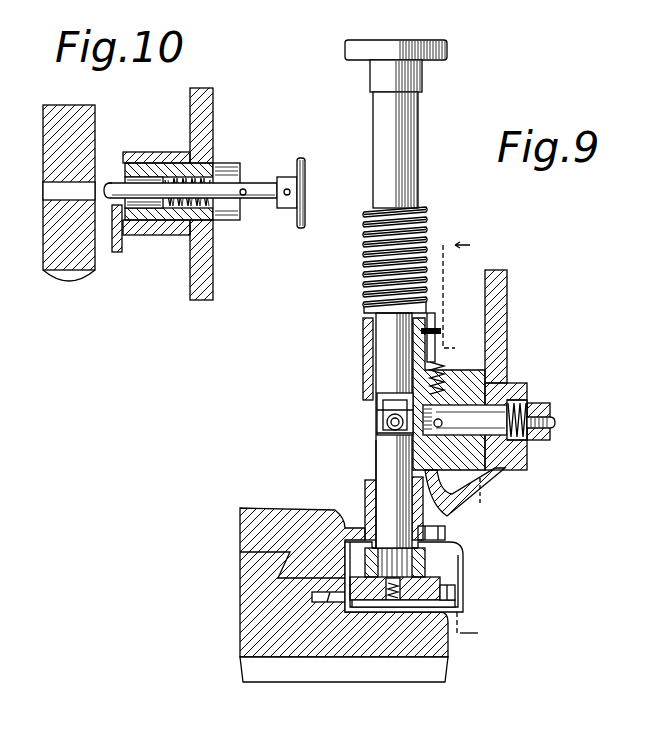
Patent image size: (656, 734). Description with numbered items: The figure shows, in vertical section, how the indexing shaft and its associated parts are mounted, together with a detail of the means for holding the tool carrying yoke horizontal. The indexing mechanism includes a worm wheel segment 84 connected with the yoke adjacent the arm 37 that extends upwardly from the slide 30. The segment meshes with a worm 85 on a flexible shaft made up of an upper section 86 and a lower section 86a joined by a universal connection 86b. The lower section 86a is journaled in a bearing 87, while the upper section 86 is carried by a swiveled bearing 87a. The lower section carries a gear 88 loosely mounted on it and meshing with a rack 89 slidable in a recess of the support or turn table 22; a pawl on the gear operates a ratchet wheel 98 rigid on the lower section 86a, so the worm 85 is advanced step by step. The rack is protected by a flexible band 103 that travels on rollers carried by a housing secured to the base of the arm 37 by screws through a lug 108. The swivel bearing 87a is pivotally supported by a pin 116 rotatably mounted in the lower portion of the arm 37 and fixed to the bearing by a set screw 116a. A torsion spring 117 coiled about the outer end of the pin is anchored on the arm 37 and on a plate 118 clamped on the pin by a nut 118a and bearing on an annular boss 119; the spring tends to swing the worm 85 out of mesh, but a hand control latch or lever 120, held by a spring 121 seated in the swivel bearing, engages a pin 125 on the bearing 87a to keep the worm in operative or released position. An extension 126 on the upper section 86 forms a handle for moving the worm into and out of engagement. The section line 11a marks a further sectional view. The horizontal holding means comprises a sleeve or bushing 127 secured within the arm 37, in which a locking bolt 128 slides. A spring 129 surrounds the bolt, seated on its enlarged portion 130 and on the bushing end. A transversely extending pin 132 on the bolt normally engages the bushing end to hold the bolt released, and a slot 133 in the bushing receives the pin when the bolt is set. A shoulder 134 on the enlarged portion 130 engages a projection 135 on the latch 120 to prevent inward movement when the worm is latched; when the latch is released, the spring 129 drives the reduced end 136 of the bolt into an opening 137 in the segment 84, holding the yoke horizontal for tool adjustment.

In FIG. 10, the worm wheel segment 84 is at (57, 262).
In FIG. 10, the arm 37 is at (214, 127).
In FIG. 9, the arm 37 is at (508, 322).
In FIG. 10, the sleeve or bushing 127 is at (215, 222).
In FIG. 10, the hand control latch or lever 120 is at (122, 232).
In FIG. 9, the hand control latch or lever 120 is at (437, 276).
In FIG. 10, the spring 129 is at (212, 164).
In FIG. 10, the enlarged portion 130 is at (157, 205).
In FIG. 10, the shoulder 134 is at (150, 164).
In FIG. 10, the locking bolt 128 is at (263, 200).
In FIG. 10, the slot 133 is at (242, 168).
In FIG. 10, the transversely extending pin 132 is at (245, 187).
In FIG. 10, the projection 135 is at (114, 208).
In FIG. 10, the reduced end 136 is at (127, 172).
In FIG. 10, the opening 137 is at (112, 178).
In FIG. 9, the slide 30 is at (255, 514).
In FIG. 9, the support or turn table 22 is at (248, 603).
In FIG. 9, the rack 89 is at (330, 603).
In FIG. 9, the ratchet wheel 98 is at (420, 568).
In FIG. 9, the gear 88 is at (460, 597).
In FIG. 9, the flexible band 103 is at (455, 608).
In FIG. 9, the lug 108 is at (463, 577).
In FIG. 9, the pin 125 is at (434, 326).
In FIG. 9, the spring 121 is at (447, 363).
In FIG. 9, the section line 11a is at (478, 237).
In FIG. 9, the pin 116 is at (465, 420).
In FIG. 9, the nut 118a is at (550, 407).
In FIG. 9, the plate 118 is at (533, 389).
In FIG. 9, the torsion spring 117 is at (513, 466).
In FIG. 9, the annular boss 119 is at (507, 468).
In FIG. 9, the set screw 116a is at (487, 502).
In FIG. 9, the swiveled bearing 87a is at (365, 344).
In FIG. 9, the bearing 87 is at (364, 495).
In FIG. 9, the upper section 86 is at (392, 358).
In FIG. 9, the lower section 86a is at (388, 482).
In FIG. 9, the universal connection 86b is at (380, 418).
In FIG. 9, the extension 126 is at (410, 119).
In FIG. 9, the worm 85 is at (365, 268).